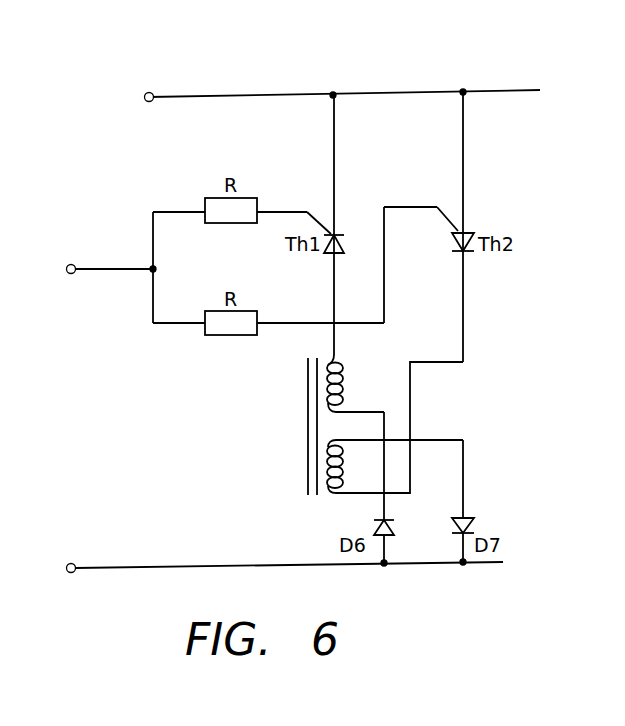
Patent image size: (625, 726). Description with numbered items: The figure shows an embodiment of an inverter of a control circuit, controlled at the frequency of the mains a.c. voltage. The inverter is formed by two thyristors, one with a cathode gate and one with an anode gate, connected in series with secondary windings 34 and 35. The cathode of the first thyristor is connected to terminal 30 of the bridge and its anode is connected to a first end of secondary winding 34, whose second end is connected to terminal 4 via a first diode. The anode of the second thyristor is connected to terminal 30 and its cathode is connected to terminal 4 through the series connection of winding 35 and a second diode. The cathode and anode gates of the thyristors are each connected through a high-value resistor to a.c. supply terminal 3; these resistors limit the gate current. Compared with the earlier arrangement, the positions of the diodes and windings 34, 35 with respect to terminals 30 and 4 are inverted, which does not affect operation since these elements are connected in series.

The terminal 30 is at (149, 92).
The a.c. supply terminal 3 is at (71, 264).
The terminal 4 is at (71, 563).
The secondary winding 34 is at (350, 377).
The secondary winding 35 is at (352, 465).